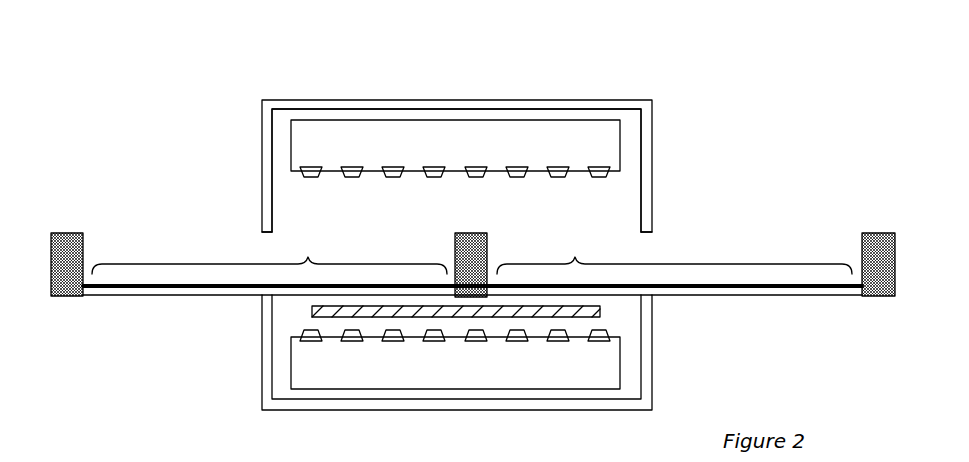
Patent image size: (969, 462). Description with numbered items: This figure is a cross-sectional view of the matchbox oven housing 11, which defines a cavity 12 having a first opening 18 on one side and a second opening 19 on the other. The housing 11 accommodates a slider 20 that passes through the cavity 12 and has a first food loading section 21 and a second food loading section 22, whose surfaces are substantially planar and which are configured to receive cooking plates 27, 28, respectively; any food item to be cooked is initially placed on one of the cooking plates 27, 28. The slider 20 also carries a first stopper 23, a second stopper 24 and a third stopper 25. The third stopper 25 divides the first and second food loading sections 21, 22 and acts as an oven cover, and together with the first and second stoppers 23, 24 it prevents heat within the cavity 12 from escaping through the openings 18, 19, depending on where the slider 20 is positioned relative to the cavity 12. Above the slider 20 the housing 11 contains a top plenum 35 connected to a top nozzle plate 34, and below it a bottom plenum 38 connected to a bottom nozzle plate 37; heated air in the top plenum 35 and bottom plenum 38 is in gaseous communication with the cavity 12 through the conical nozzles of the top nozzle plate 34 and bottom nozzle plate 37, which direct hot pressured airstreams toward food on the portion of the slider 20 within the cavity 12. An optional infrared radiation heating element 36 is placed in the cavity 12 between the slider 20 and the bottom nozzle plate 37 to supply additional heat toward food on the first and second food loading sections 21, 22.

The housing 11 is at (537, 100).
The cavity 12 is at (412, 231).
The first opening 18 is at (260, 248).
The second opening 19 is at (652, 248).
The slider 20 is at (842, 297).
The first food loading section 21 is at (269, 252).
The second food loading section 22 is at (674, 252).
The first stopper 23 is at (63, 232).
The second stopper 24 is at (877, 233).
The third stopper 25 is at (477, 231).
The cooking plate 27 is at (167, 290).
The cooking plate 28 is at (778, 290).
The top nozzle plate 34 is at (620, 172).
The top plenum 35 is at (494, 148).
The infrared radiation heating element 36 is at (312, 310).
The bottom nozzle plate 37 is at (618, 335).
The bottom plenum 38 is at (535, 374).